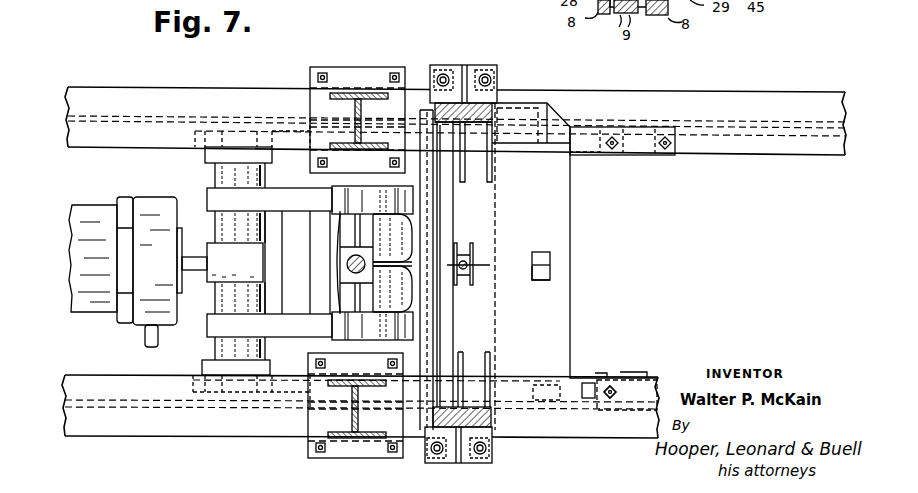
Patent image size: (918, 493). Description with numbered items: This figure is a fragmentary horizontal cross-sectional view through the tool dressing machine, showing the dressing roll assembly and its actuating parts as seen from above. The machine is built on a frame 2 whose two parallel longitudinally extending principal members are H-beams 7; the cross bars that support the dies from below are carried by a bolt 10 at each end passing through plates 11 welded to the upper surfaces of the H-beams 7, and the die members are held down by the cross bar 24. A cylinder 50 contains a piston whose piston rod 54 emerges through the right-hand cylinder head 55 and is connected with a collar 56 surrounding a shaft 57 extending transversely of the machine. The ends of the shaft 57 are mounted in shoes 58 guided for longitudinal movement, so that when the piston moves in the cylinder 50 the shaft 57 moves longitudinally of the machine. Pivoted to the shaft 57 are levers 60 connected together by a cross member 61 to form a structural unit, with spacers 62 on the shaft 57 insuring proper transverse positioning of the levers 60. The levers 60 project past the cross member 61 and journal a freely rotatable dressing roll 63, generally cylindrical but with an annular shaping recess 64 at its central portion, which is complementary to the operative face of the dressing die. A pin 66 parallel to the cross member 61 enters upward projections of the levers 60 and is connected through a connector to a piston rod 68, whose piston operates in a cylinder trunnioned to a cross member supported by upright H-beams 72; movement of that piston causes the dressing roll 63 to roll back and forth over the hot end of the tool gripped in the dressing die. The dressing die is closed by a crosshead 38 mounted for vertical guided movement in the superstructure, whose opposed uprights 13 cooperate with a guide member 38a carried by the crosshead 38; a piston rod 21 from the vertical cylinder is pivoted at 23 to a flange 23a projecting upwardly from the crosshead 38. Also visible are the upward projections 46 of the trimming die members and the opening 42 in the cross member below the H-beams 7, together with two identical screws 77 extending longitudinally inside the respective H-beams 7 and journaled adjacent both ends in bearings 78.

The frame 2 is at (126, 86).
The H-beam 7 is at (172, 97).
The shaft 57 is at (224, 143).
The shoe 58 is at (205, 155).
The spacer 62 is at (234, 220).
The lever 60 is at (295, 194).
The pin 66 is at (340, 301).
The cylinder 50 is at (84, 302).
The right-hand cylinder head 55 is at (170, 265).
The piston rod 54 is at (196, 256).
The collar 56 is at (247, 271).
The cross member 61 is at (302, 260).
The dressing roll 63 is at (397, 236).
The annular shaping recess 64 is at (361, 268).
The piston rod 68 is at (364, 276).
The cross bar 24 is at (448, 197).
The flange 23a is at (463, 258).
The piston rod 21 is at (467, 262).
The pivot 23 is at (468, 266).
The crosshead 38 is at (560, 196).
The guide member 38a is at (425, 113).
The upright 13 is at (478, 104).
The bolt 10 is at (440, 70).
The plate 11 is at (469, 68).
The upright H-beam 72 is at (353, 96).
The screw 77 is at (725, 133).
The bearing 78 is at (643, 157).
The upward projection 46 is at (550, 260).
The opening 42 is at (538, 278).